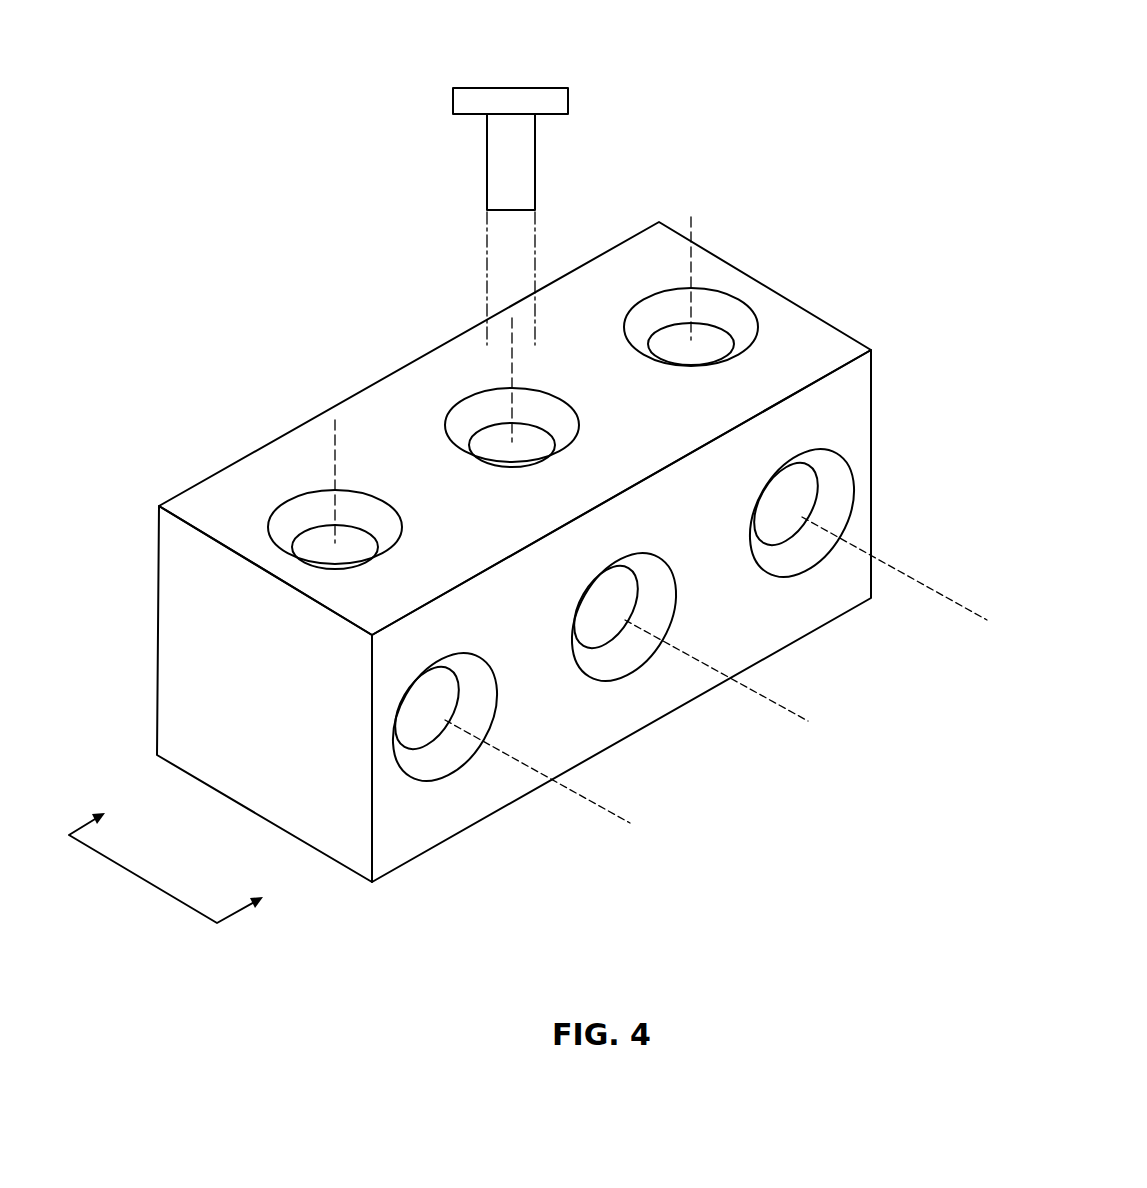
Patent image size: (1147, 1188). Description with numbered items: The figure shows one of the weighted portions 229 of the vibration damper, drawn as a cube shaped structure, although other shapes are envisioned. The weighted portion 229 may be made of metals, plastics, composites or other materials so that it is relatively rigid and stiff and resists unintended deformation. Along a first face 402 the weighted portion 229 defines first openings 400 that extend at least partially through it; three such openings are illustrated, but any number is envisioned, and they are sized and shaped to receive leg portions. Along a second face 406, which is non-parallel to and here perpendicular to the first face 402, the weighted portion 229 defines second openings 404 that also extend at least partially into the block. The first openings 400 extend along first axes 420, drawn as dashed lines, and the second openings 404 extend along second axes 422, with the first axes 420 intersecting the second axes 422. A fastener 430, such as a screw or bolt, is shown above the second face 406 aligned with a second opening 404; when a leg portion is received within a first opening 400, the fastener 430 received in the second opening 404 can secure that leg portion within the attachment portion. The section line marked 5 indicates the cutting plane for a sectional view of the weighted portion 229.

The weighted portion 229 is at (268, 186).
The first openings 400 is at (438, 685).
The first face 402 is at (398, 842).
The second openings 404 is at (303, 547).
The second face 406 is at (360, 413).
The first axes 420 is at (618, 815).
The second axes 422 is at (335, 432).
The fastener 430 is at (517, 88).
The section line 5- 5 is at (176, 855).